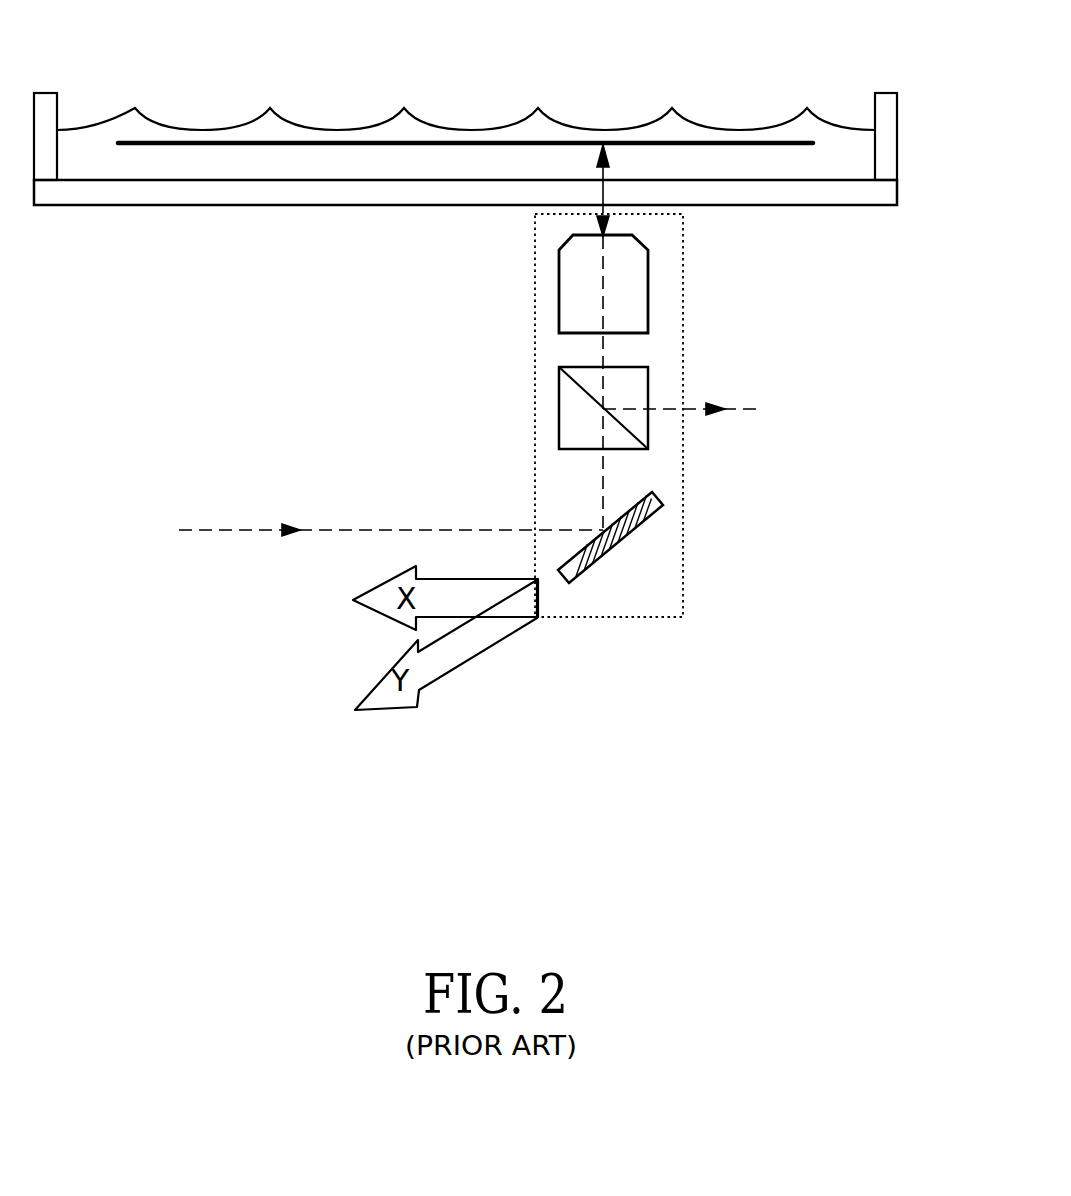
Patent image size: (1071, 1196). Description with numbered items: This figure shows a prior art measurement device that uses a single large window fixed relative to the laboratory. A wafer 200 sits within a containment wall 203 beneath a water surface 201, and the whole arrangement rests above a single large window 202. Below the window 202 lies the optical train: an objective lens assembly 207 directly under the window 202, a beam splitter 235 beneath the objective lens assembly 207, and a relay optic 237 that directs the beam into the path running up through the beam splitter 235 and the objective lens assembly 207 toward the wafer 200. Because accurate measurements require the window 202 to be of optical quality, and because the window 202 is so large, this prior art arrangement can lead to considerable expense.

The wafer 200 is at (371, 147).
The water surface 201 is at (537, 108).
The window 202 is at (737, 205).
The containment wall 203 is at (880, 93).
The objective lens assembly 207 is at (559, 320).
The beam splitter 235 is at (559, 429).
The relay optic 237 is at (595, 570).